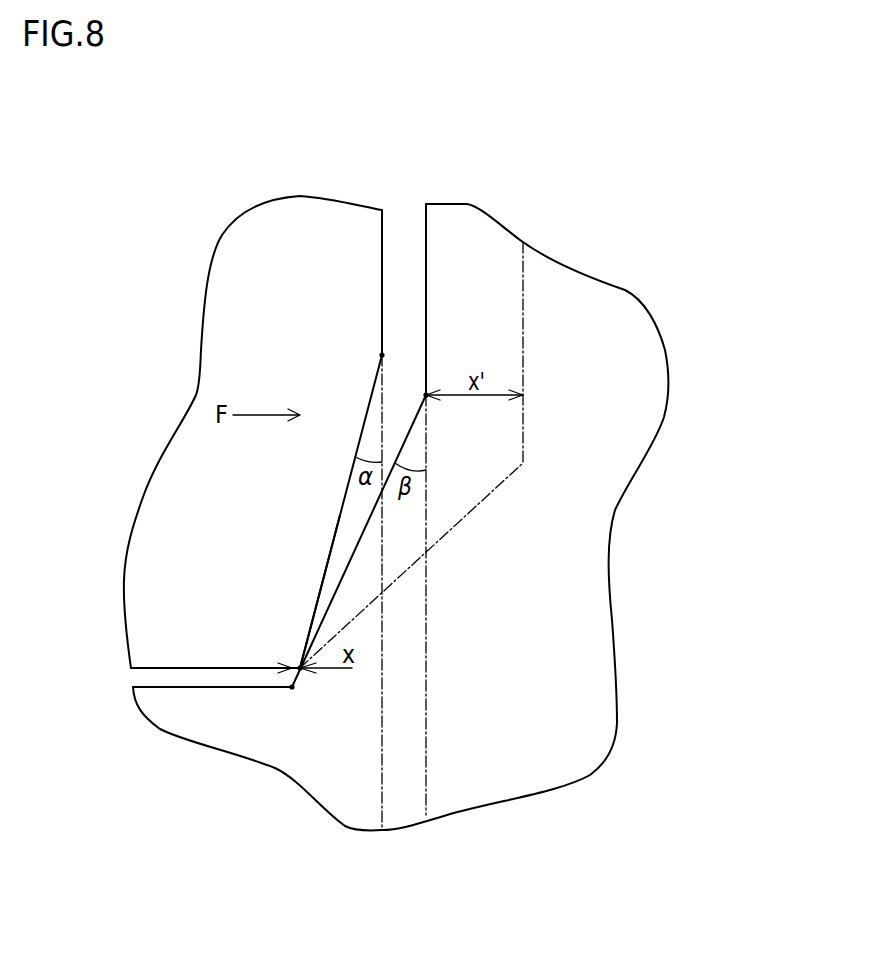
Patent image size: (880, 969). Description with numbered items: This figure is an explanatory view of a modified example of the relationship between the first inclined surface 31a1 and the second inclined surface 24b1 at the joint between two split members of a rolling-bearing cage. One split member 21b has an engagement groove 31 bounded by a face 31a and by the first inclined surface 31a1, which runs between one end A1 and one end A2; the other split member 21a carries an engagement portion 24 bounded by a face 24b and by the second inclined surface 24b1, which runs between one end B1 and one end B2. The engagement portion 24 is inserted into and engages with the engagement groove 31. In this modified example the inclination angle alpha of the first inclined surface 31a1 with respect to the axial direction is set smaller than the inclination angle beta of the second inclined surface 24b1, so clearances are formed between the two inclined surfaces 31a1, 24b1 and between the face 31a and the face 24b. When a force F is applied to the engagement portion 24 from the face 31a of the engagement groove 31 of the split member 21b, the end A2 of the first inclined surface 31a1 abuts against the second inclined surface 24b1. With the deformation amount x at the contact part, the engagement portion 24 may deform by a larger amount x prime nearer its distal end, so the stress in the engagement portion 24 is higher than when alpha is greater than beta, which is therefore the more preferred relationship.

The split member 21b is at (218, 227).
The split member 21a is at (636, 715).
The engagement groove 31 is at (331, 439).
The face of the engagement groove 31a is at (383, 253).
The first inclined surface 31a1 is at (330, 555).
The engagement portion 24 is at (613, 328).
The face of the engagement portion 24b is at (426, 293).
The second inclined surface 24b1 is at (350, 563).
The one end of the first inclined surface A1 is at (382, 355).
The one end of the first inclined surface A2 is at (300, 668).
The one end of the second inclined surface B1 is at (426, 395).
The one end of the second inclined surface B2 is at (292, 687).